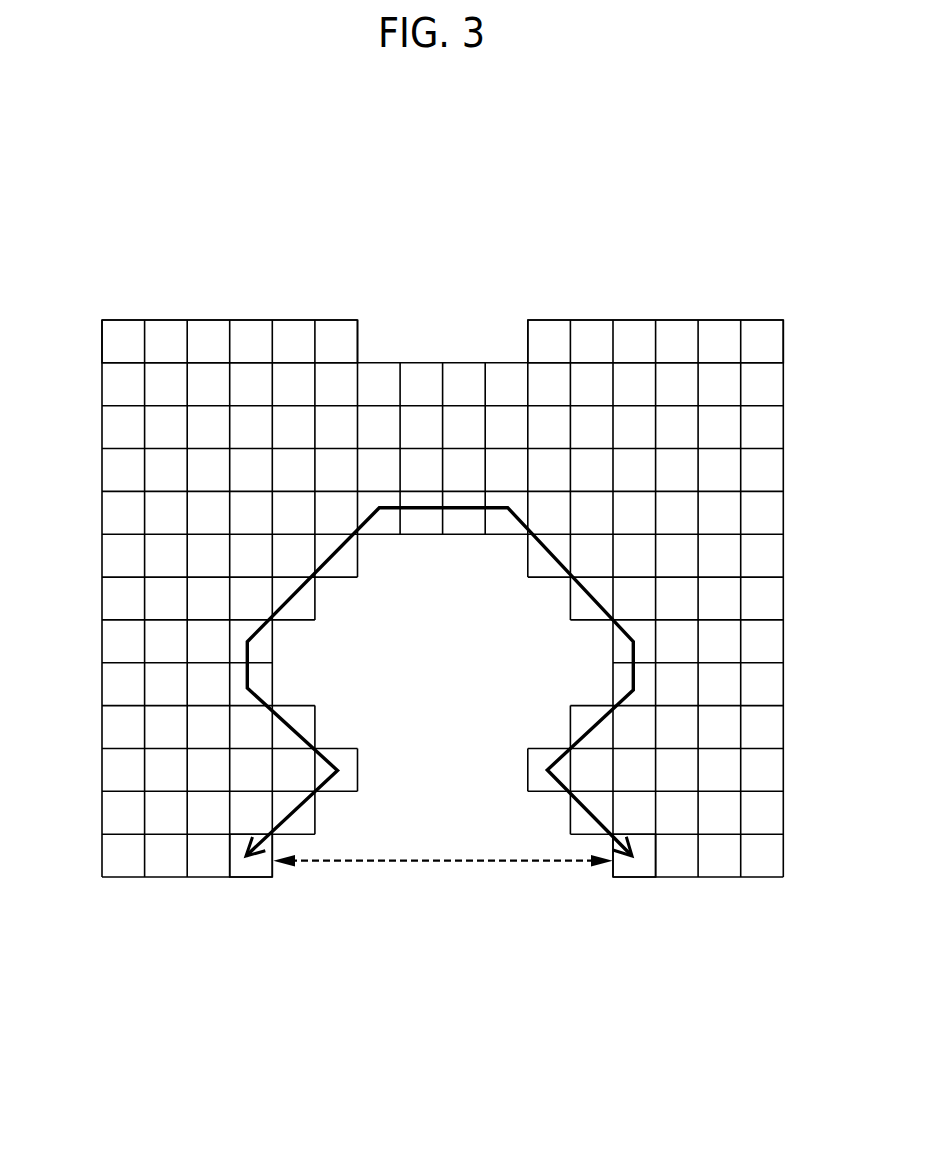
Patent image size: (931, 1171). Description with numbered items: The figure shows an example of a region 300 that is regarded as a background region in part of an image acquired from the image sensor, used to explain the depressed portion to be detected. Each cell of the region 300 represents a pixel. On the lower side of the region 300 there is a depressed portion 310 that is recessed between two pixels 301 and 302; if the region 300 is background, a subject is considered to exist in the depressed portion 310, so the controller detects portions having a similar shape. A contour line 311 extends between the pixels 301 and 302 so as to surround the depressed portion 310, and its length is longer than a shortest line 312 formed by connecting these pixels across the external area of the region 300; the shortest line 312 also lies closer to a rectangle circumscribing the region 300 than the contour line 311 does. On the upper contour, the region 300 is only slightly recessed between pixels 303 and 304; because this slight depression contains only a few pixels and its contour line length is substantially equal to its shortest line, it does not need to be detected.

The region 300 is at (531, 178).
The pixel 301 is at (253, 868).
The pixel 302 is at (625, 868).
The pixel 303 is at (332, 327).
The pixel 304 is at (541, 327).
The depressed portion 310 is at (465, 773).
The contour line 311 is at (285, 605).
The shortest line 312 is at (402, 865).